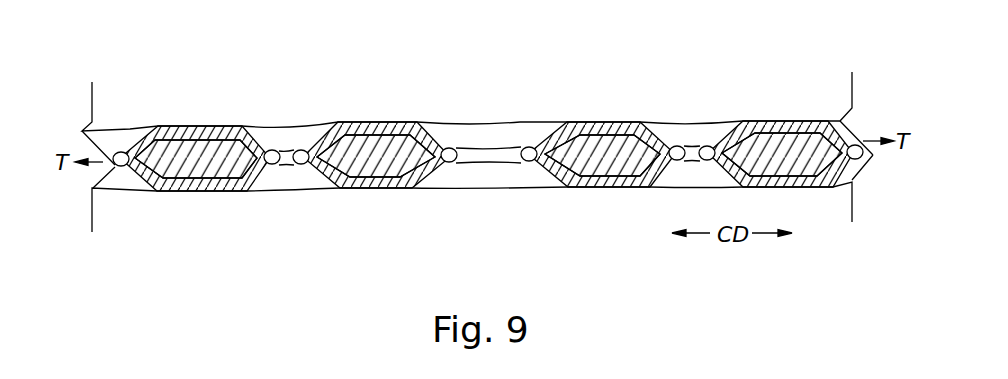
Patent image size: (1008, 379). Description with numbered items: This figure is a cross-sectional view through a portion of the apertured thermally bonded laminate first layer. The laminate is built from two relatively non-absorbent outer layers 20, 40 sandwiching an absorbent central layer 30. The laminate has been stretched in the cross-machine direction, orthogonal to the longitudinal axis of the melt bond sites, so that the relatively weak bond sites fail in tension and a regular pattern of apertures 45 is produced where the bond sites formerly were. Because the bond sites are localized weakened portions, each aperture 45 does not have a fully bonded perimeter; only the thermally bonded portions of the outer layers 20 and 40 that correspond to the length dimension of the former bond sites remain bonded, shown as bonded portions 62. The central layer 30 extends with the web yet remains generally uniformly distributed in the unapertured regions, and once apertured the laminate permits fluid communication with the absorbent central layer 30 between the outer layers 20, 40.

The outer layer 20 is at (223, 130).
The outer layer 40 is at (223, 187).
The central layer 30 is at (197, 155).
The aperture 45 is at (283, 135).
The bonded portion 62 is at (458, 152).